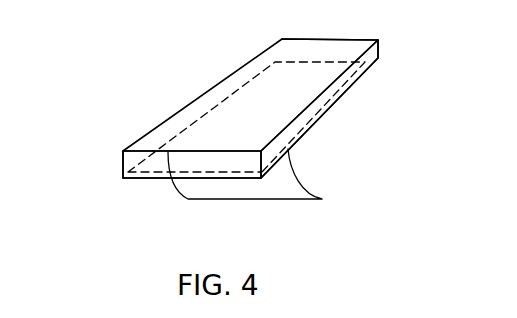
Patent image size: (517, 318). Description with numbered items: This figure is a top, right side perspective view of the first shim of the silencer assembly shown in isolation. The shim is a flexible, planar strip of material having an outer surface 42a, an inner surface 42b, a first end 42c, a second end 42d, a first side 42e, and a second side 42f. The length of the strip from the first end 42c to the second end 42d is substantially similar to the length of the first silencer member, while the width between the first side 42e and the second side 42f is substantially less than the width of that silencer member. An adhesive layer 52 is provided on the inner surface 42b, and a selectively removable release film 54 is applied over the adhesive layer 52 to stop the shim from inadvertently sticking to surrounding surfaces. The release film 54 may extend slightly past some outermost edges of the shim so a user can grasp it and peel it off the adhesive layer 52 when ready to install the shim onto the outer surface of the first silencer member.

The outer surface 42a is at (220, 100).
The inner surface 42b is at (159, 178).
The first end 42c is at (157, 158).
The second end 42d is at (343, 40).
The first side 42e is at (122, 160).
The second side 42f is at (337, 98).
The adhesive layer 52 is at (324, 120).
The release film 54 is at (287, 198).